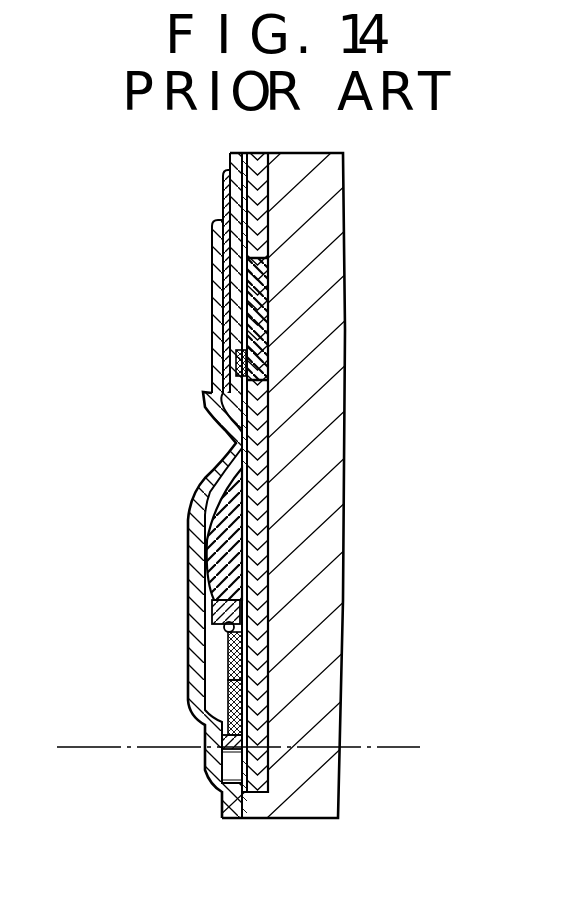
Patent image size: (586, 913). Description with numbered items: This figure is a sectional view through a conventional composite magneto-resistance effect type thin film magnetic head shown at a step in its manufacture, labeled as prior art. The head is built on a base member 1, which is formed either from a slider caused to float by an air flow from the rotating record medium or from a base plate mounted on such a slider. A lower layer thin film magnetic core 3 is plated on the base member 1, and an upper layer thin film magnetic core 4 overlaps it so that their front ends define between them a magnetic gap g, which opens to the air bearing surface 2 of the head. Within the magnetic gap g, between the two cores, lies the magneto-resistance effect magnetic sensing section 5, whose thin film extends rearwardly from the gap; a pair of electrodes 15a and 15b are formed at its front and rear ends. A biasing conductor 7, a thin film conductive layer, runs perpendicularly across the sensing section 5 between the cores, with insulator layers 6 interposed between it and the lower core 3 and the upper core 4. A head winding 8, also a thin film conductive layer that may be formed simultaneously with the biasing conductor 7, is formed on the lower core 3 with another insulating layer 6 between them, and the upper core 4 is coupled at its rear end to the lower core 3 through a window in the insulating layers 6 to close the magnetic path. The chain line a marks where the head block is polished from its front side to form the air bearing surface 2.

The base member 1 is at (344, 588).
The air bearing surface 2 is at (264, 823).
The lower layer thin film magnetic core 3 is at (255, 512).
The upper layer thin film magnetic core 4 is at (192, 645).
The magneto-resistance effect magnetic sensing section 5 is at (244, 686).
The insulating layer 6 is at (258, 312).
The biasing conductor 7 is at (212, 670).
The head winding 8 is at (246, 363).
The electrode 15a is at (222, 741).
The electrode 15b is at (214, 610).
The chain line a is at (103, 752).
The magnetic gap g is at (224, 769).